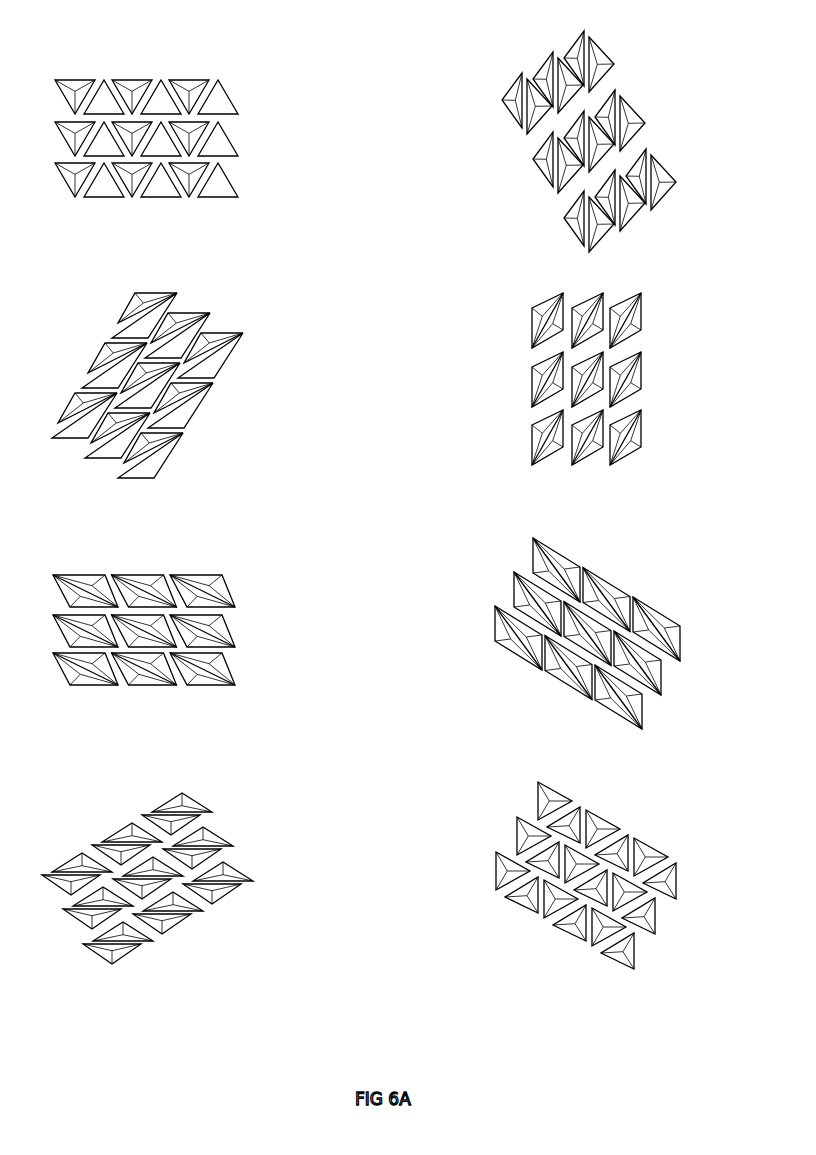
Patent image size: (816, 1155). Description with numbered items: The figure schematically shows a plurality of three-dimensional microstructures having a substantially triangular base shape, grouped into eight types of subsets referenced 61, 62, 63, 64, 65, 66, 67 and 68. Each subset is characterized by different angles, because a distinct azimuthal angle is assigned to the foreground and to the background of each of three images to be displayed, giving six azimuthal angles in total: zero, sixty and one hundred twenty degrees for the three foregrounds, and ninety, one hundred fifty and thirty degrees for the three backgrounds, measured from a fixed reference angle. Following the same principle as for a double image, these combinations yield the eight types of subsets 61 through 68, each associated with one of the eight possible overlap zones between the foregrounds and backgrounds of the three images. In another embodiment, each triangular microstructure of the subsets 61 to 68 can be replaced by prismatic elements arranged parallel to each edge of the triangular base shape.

The subset of triangular microstructures 61 is at (243, 140).
The subset of triangular microstructures 62 is at (199, 430).
The subset of triangular microstructures 63 is at (243, 627).
The subset of triangular microstructures 64 is at (186, 933).
The subset of triangular microstructures 65 is at (652, 108).
The subset of triangular microstructures 66 is at (655, 383).
The subset of triangular microstructures 67 is at (688, 640).
The subset of triangular microstructures 68 is at (646, 954).